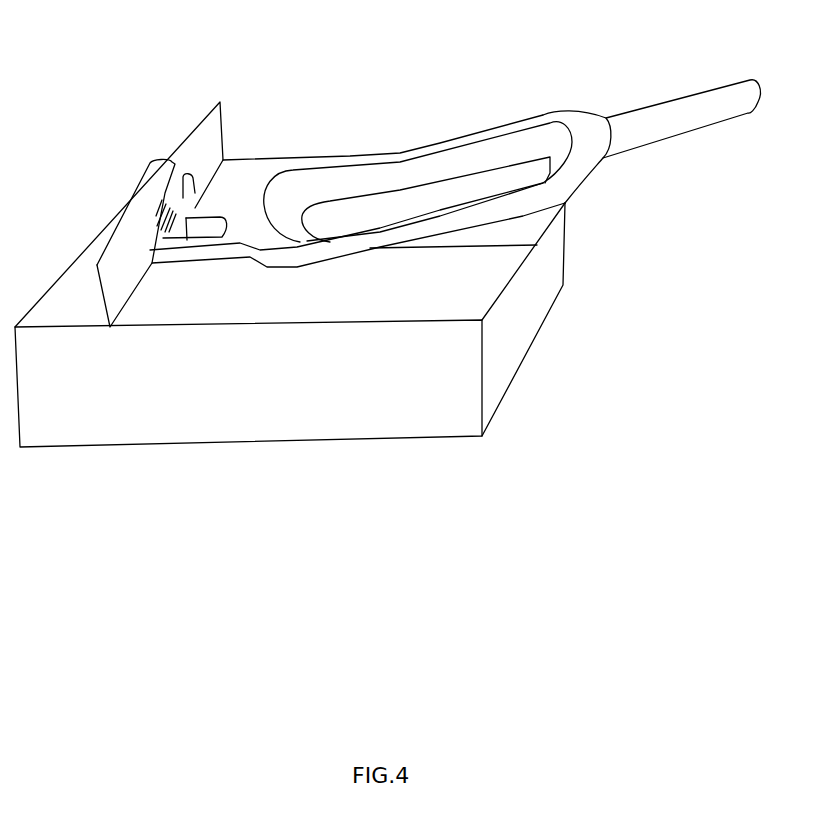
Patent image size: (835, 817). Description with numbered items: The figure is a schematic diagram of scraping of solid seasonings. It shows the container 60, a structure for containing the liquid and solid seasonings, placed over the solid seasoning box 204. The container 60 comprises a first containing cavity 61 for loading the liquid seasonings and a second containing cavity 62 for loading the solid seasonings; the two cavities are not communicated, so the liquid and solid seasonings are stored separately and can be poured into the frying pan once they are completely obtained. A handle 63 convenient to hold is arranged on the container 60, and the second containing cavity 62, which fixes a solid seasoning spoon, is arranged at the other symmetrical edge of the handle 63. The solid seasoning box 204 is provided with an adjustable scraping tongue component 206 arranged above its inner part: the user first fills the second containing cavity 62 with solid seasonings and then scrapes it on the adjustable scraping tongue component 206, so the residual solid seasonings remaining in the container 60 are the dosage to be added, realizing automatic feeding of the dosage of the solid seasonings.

The solid seasoning box 204 is at (243, 397).
The container 60 is at (543, 117).
The first containing cavity 61 is at (340, 212).
The second containing cavity 62 is at (196, 212).
The handle 63 is at (693, 112).
The adjustable scraping tongue component 206 is at (167, 210).